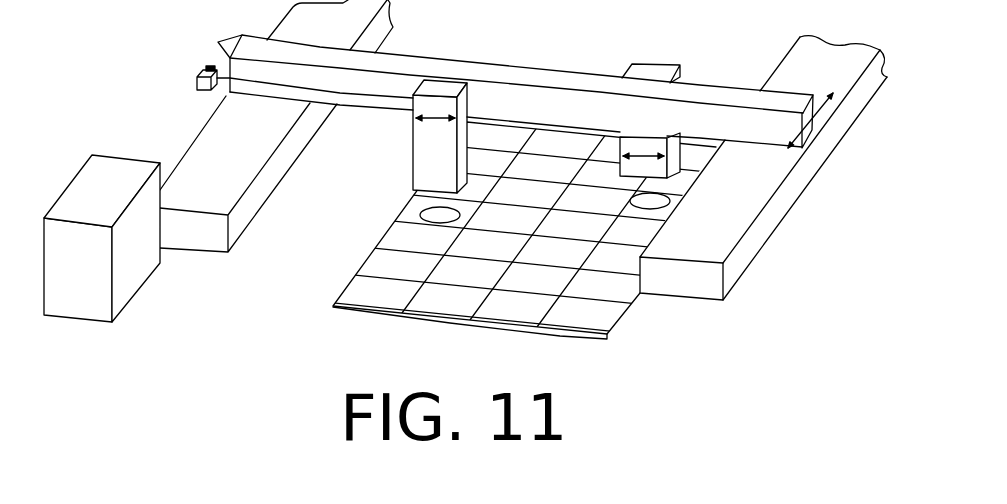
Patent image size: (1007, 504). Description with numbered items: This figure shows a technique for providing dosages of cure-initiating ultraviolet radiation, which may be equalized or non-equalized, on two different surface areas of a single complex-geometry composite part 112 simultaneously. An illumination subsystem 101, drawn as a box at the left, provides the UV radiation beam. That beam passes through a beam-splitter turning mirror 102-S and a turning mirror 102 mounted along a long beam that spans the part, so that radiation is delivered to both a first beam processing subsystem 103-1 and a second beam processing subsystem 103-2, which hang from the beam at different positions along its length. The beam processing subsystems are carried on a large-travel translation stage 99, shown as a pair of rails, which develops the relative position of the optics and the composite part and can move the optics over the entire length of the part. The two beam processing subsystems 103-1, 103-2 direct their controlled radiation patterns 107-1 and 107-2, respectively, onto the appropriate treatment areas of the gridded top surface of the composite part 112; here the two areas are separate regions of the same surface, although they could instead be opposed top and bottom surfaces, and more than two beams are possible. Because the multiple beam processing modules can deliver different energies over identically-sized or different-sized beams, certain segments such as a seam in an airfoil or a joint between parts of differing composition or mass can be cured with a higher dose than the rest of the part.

The stage 99 is at (715, 94).
The illumination subsystem 101 is at (126, 304).
The turning mirror 102 is at (219, 38).
The beam-splitter turning mirror 102-S is at (208, 68).
The beam processing subsystem 103-1 is at (410, 155).
The beam processing subsystem 103-2 is at (647, 66).
The controlled radiation pattern 107-1 is at (422, 212).
The controlled radiation pattern 107-2 is at (636, 208).
The complex-geometry composite part 112 is at (345, 290).